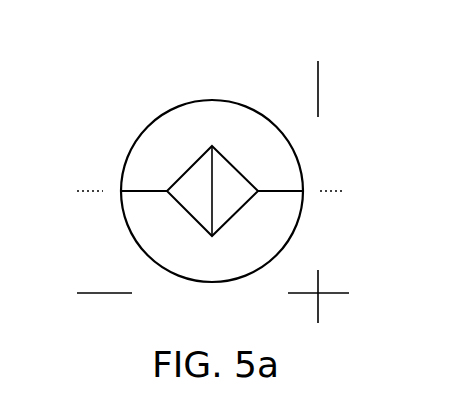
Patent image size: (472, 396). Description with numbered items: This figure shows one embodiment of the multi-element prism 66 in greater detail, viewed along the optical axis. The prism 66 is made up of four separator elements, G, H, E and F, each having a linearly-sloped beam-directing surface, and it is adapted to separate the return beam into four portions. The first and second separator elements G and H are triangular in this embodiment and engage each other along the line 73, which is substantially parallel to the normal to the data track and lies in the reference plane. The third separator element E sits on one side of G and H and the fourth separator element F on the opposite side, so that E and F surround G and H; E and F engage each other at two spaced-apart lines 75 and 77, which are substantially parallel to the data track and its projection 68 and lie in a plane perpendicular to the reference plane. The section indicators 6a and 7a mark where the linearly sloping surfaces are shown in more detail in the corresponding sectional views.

The multi-element prism 66 is at (86, 69).
The line 73 is at (223, 160).
The line 75 is at (150, 191).
The line 77 is at (272, 191).
The projection 68 is at (212, 193).
The section line 6a- 6a is at (318, 61).
The section line 7a- 7a is at (77, 269).